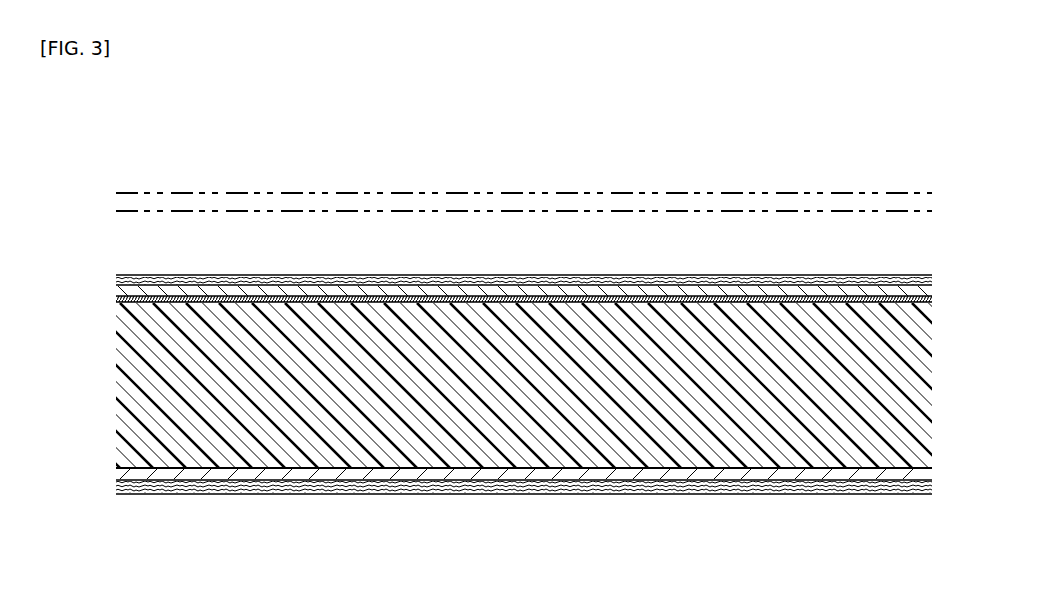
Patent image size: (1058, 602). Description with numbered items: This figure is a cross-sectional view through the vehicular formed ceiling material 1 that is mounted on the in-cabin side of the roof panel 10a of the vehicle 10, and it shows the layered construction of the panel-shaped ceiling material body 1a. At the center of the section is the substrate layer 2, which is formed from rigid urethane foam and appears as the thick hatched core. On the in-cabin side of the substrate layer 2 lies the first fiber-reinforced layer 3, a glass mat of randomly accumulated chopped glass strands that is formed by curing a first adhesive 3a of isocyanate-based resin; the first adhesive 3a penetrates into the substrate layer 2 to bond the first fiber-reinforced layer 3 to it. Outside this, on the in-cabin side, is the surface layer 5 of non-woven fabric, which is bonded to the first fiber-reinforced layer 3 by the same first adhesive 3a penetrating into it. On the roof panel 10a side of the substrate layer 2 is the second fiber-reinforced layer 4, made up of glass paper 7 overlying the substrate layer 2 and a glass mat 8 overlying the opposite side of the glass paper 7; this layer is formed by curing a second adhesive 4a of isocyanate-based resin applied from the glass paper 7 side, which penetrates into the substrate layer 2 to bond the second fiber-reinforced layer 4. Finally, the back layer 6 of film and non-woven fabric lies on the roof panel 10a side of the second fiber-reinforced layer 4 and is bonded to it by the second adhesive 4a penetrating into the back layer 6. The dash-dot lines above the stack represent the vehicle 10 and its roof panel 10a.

The vehicular formed ceiling material 1 is at (529, 339).
The ceiling material body 1a is at (757, 263).
The substrate layer 2 is at (797, 470).
The first fiber-reinforced layer 3 is at (524, 520).
The first adhesive 3a is at (660, 473).
The second fiber-reinforced layer 4 is at (524, 199).
The second adhesive 4a is at (442, 292).
The surface layer 5 is at (525, 497).
The back layer 6 is at (313, 275).
The glass paper 7 is at (630, 288).
The glass mat 8 is at (733, 292).
The vehicle 10 is at (210, 177).
The roof panel 10a is at (553, 193).